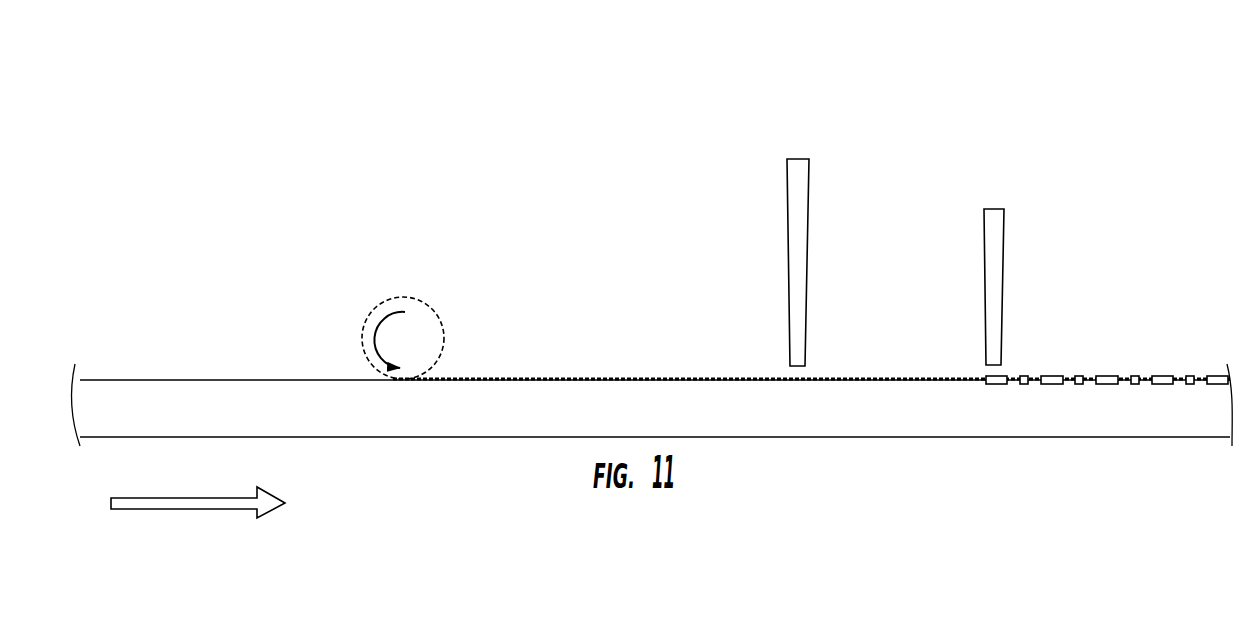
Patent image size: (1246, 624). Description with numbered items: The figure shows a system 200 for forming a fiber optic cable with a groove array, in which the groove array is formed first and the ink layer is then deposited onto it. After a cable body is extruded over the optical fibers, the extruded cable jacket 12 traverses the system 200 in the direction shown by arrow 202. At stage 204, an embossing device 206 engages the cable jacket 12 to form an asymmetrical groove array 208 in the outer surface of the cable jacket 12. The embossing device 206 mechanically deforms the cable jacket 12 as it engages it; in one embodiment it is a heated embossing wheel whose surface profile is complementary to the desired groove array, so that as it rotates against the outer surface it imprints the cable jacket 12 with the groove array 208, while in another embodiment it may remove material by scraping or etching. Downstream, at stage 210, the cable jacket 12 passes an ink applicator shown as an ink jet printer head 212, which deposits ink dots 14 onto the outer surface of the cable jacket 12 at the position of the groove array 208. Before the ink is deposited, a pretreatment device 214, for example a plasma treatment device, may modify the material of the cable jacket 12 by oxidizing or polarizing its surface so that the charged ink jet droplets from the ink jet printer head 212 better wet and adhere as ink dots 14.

The system 200 is at (1007, 83).
The cable jacket 12 is at (190, 398).
The ink dots 14 is at (1112, 348).
The arrow 202 is at (173, 510).
The stage 204 is at (412, 240).
The embossing device 206 is at (430, 333).
The groove array 208 is at (607, 378).
The stage 210 is at (1005, 197).
The ink jet printer head 212 is at (995, 277).
The pretreatment device 214 is at (800, 225).